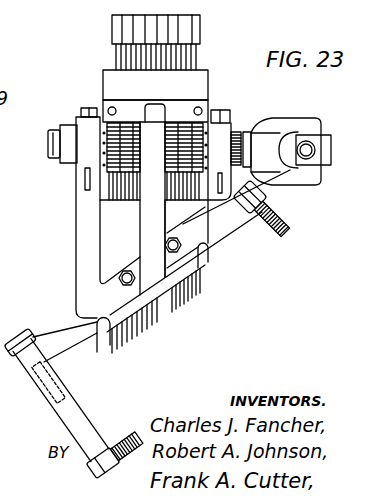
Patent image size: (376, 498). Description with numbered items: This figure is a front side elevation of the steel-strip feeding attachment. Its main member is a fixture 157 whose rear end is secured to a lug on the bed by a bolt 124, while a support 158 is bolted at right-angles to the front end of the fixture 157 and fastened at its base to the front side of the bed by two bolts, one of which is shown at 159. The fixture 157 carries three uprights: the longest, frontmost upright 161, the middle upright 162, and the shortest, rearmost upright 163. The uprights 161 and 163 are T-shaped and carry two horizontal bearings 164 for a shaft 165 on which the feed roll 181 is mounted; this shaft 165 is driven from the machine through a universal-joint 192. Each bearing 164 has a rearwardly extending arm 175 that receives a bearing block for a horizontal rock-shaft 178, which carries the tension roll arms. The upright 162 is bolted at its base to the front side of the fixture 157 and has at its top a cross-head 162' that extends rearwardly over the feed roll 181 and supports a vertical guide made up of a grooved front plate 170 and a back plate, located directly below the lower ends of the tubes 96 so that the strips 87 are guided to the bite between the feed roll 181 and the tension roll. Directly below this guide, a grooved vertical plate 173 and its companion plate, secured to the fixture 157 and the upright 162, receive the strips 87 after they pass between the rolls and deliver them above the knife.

The tubes 96 is at (127, 25).
The strips 87 is at (116, 46).
The front plate 170 is at (196, 87).
The cross-head 162' is at (155, 100).
The horizontal bearings 164 is at (75, 125).
The shaft 165 is at (260, 125).
The arm 175 is at (65, 132).
The rock-shaft 178 is at (50, 143).
The feed roll 181 is at (82, 182).
The upright 161 is at (83, 228).
The upright 162 is at (154, 242).
The universal-joint 192 is at (316, 172).
The bolt 124 is at (285, 222).
The upright 163 is at (235, 168).
The vertical plate 173 is at (184, 272).
The fixture 157 is at (80, 322).
The support 158 is at (62, 408).
The bolt 159 is at (125, 430).